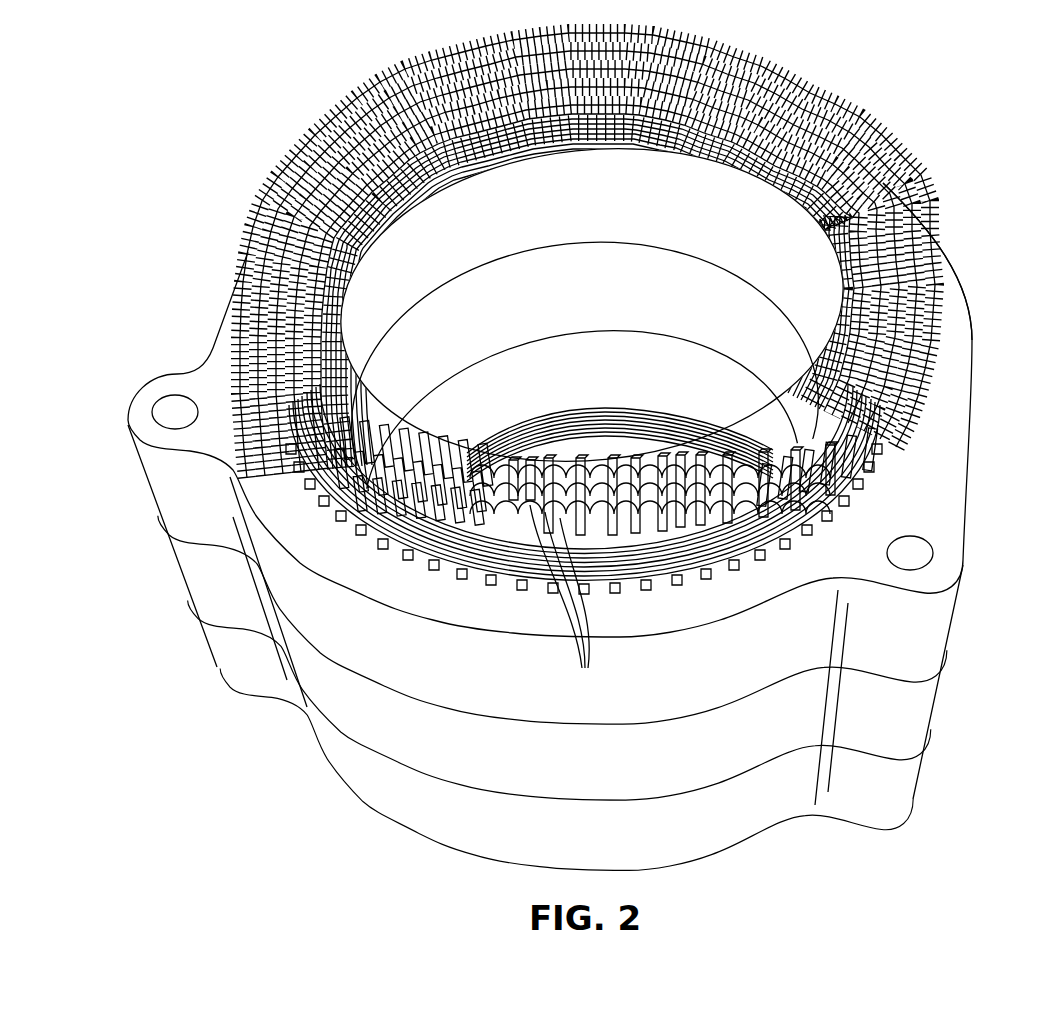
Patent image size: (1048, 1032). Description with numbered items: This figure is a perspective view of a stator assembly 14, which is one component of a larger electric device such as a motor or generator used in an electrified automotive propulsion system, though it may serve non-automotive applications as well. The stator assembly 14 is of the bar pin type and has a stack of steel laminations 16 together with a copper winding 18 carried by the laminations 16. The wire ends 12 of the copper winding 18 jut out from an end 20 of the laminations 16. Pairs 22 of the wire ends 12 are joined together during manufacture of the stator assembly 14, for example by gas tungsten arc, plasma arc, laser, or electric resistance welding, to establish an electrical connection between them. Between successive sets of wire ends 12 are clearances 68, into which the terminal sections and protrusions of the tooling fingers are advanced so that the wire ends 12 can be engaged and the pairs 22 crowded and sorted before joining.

The wire ends 12 is at (848, 130).
The stator assembly 14 is at (972, 264).
The stack of steel laminations 16 is at (478, 750).
The copper winding 18 is at (936, 313).
The end of the laminations 20 is at (943, 360).
The pairs of wire ends 22 is at (312, 138).
The clearances 68 is at (564, 603).